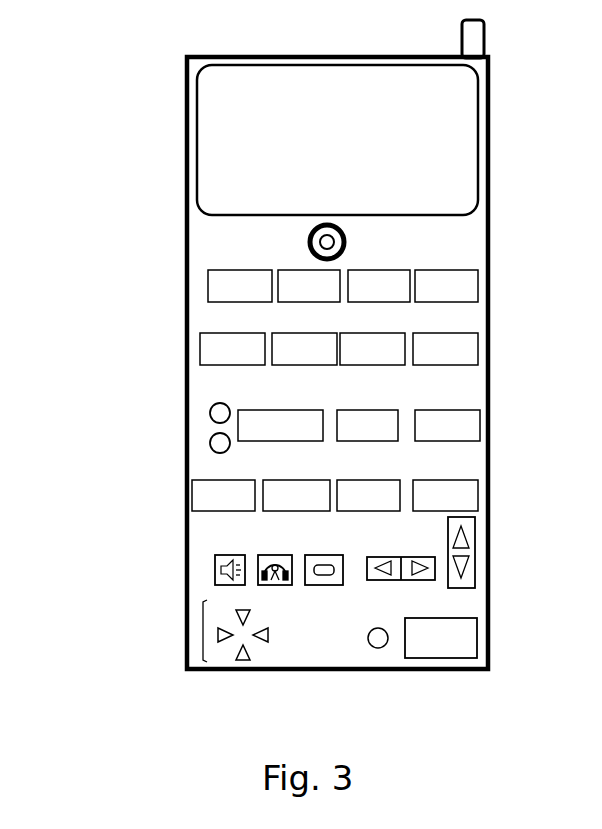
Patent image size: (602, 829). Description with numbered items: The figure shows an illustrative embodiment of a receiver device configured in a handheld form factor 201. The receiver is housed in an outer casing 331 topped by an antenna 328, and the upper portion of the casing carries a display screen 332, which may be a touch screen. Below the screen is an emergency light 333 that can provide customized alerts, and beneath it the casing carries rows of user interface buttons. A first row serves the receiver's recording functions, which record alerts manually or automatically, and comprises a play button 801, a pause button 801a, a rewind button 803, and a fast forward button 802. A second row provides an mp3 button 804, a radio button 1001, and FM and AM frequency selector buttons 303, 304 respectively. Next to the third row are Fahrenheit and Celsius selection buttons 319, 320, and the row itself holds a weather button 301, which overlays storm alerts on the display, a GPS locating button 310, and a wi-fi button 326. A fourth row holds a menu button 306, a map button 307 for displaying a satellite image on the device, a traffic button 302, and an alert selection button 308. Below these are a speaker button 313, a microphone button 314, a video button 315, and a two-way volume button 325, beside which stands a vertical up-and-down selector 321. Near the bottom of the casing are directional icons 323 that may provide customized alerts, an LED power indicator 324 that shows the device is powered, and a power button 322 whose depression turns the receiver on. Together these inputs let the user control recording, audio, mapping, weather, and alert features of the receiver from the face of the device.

The form factor 201 is at (70, 60).
The antenna 328 is at (487, 33).
The display screen 332 is at (476, 133).
The outer casing 331 is at (490, 197).
The emergency light 333 is at (308, 242).
The play button 801 is at (208, 282).
The pause button 801a is at (292, 303).
The rewind button 803 is at (360, 303).
The fast forward button 802 is at (478, 290).
The mp3 button 804 is at (200, 355).
The radio button 1001 is at (285, 365).
The FM frequency selector button 303 is at (360, 365).
The AM frequency selector button 304 is at (478, 360).
The Fahrenheit selection button 319 is at (208, 410).
The Celsius selection button 320 is at (208, 443).
The weather button 301 is at (270, 441).
The GPS locating button 310 is at (360, 441).
The wi-fi button 326 is at (480, 437).
The menu button 306 is at (190, 497).
The map button 307 is at (285, 511).
The traffic button 302 is at (355, 511).
The alert selection button 308 is at (478, 500).
The speaker button 313 is at (213, 572).
The microphone button 314 is at (267, 585).
The video button 315 is at (320, 585).
The volume button 325 is at (378, 580).
The up-down selector button 321 is at (476, 533).
The icons 323 is at (203, 633).
The LED power indicator 324 is at (366, 639).
The power button 322 is at (473, 643).